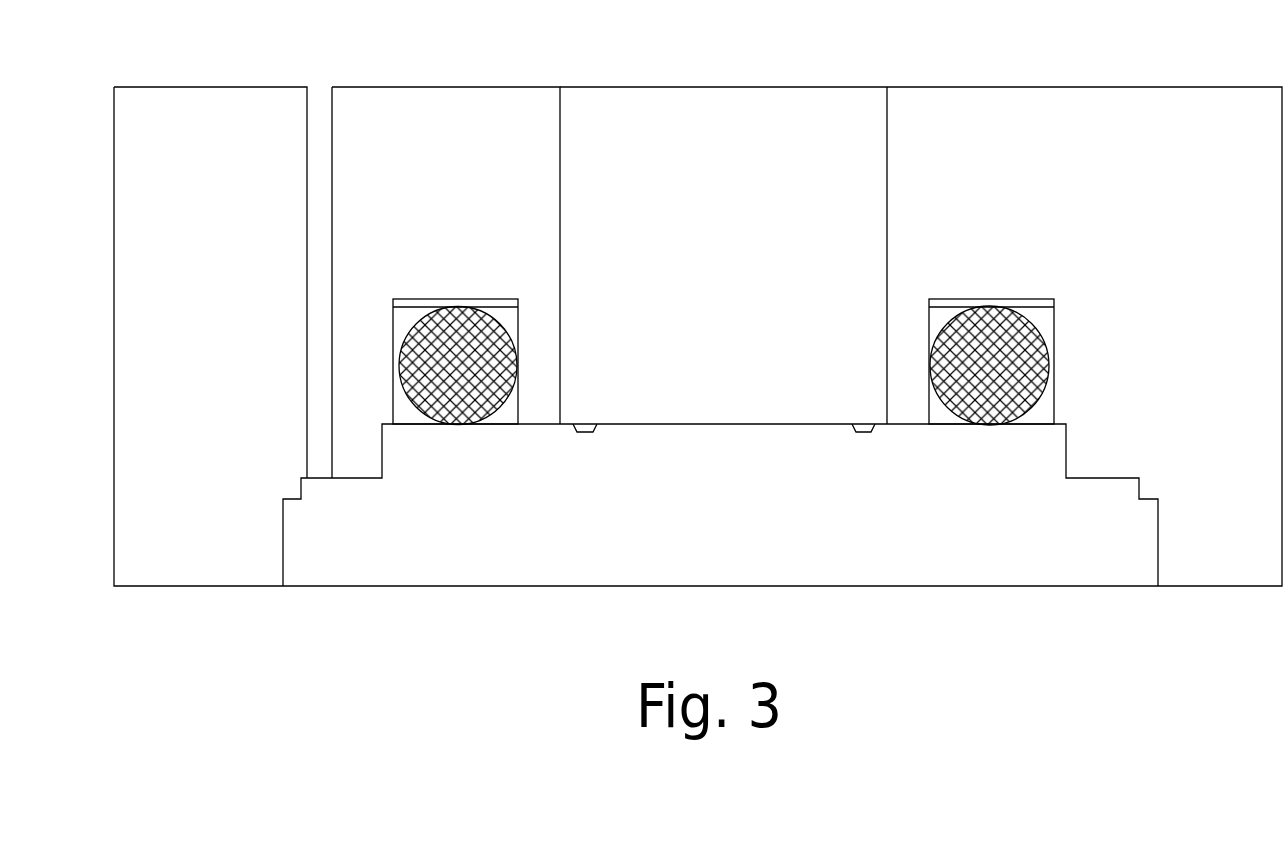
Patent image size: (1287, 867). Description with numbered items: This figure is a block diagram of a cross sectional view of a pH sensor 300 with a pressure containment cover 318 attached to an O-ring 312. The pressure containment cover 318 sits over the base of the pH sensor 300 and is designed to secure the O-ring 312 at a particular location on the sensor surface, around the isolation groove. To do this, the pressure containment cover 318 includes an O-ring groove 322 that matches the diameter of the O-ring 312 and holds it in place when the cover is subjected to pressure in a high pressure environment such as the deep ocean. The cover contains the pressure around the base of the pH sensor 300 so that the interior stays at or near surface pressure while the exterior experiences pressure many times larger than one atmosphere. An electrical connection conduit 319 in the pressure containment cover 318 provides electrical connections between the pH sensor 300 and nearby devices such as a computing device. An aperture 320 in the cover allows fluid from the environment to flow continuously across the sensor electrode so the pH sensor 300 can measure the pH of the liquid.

The pH sensor 300 is at (943, 587).
The O-ring 312 is at (1040, 361).
The pressure containment cover 318 is at (415, 86).
The electrical connection conduit 319 is at (307, 210).
The aperture 320 is at (722, 96).
The O-ring groove 322 is at (437, 299).